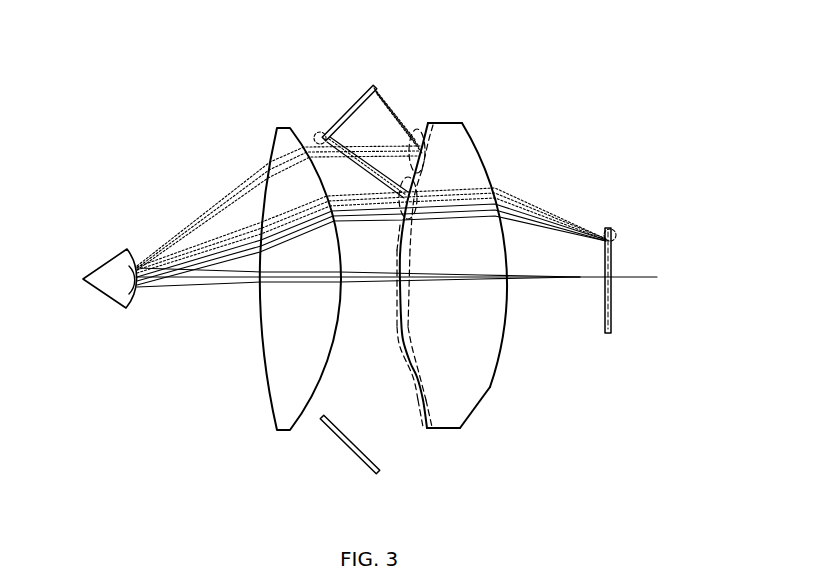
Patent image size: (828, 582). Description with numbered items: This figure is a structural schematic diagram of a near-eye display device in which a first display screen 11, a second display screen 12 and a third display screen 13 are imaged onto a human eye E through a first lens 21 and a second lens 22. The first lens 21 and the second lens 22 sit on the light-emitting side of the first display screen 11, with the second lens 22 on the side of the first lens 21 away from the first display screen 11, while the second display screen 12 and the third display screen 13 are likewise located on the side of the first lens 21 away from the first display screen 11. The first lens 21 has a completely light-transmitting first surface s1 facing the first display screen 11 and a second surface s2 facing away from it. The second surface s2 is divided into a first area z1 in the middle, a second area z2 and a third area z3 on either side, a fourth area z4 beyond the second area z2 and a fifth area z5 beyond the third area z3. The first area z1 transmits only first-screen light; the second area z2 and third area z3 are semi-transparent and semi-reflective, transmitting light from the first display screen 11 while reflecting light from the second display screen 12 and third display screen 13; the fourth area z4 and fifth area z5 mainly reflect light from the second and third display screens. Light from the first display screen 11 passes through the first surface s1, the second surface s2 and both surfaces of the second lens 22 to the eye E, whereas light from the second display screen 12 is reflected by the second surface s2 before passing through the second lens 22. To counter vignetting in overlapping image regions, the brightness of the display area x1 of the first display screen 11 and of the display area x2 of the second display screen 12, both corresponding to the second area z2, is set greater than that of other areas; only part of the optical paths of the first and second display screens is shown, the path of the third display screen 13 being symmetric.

The first display screen 11 is at (410, 278).
The second display screen 12 is at (348, 112).
The third display screen 13 is at (343, 447).
The first lens 21 is at (483, 285).
The second lens 22 is at (265, 385).
The human eye E is at (108, 287).
The display area of the first display screen corresponding to the second area x1 is at (607, 228).
The display area of the second display screen corresponding to the second area x2 is at (316, 132).
The first surface s1 is at (508, 329).
The second surface s2 is at (407, 292).
The first area z1 is at (397, 288).
The second area z2 is at (403, 207).
The third area z3 is at (402, 352).
The fourth area z4 is at (417, 130).
The fifth area z5 is at (417, 408).